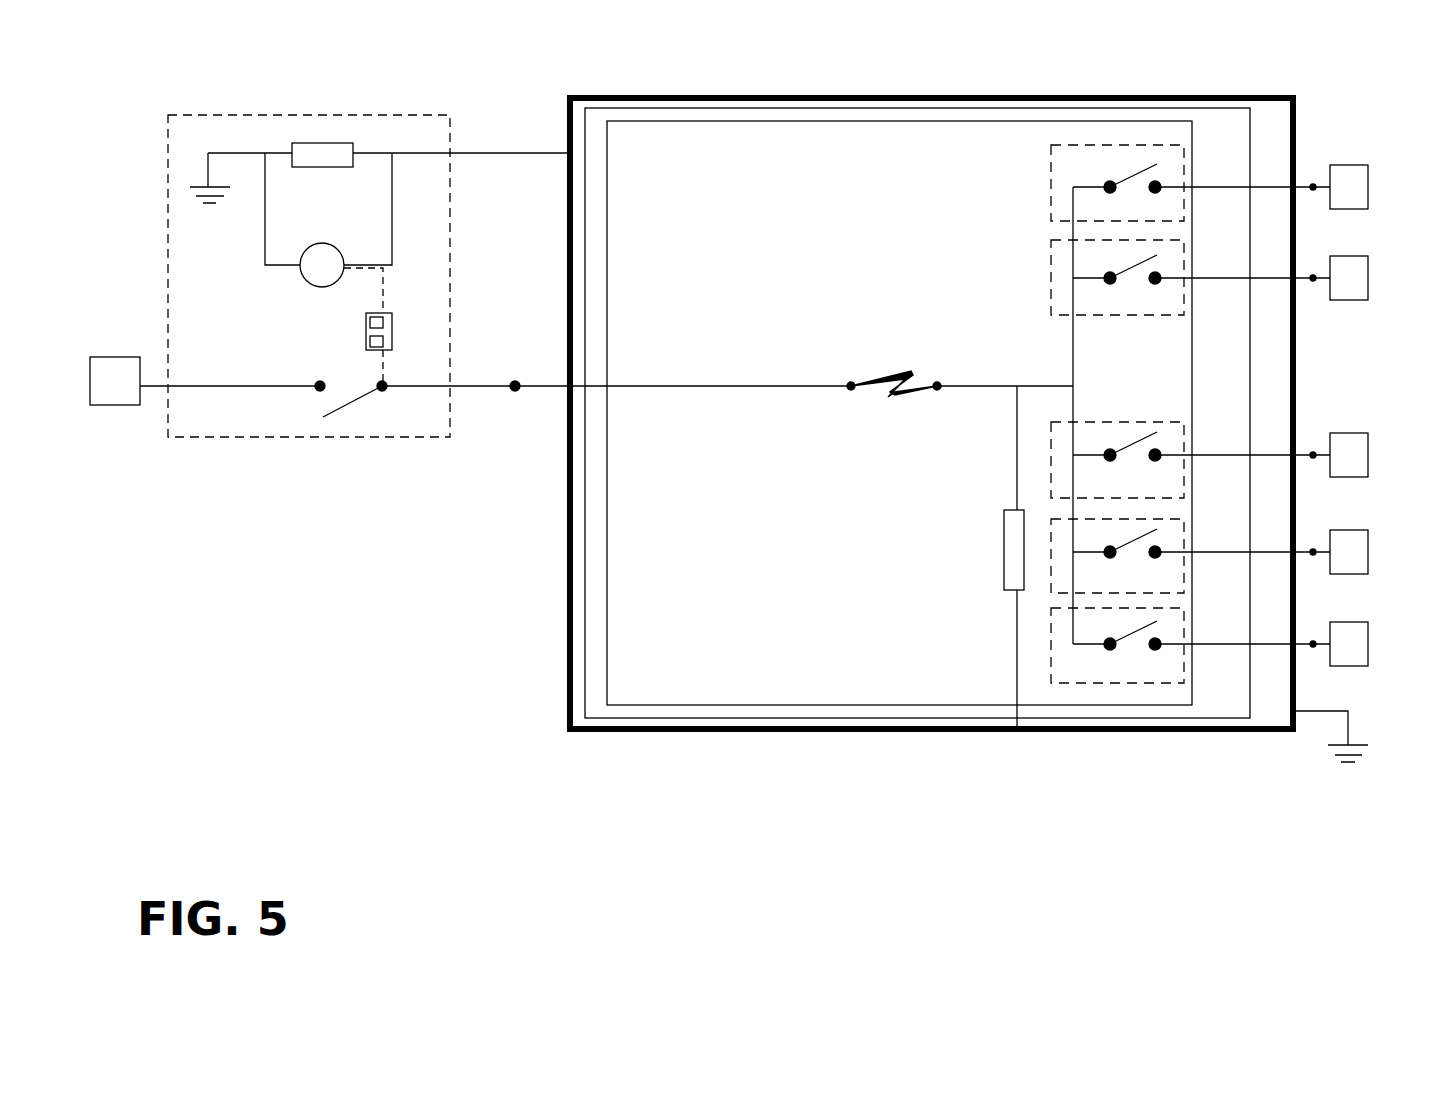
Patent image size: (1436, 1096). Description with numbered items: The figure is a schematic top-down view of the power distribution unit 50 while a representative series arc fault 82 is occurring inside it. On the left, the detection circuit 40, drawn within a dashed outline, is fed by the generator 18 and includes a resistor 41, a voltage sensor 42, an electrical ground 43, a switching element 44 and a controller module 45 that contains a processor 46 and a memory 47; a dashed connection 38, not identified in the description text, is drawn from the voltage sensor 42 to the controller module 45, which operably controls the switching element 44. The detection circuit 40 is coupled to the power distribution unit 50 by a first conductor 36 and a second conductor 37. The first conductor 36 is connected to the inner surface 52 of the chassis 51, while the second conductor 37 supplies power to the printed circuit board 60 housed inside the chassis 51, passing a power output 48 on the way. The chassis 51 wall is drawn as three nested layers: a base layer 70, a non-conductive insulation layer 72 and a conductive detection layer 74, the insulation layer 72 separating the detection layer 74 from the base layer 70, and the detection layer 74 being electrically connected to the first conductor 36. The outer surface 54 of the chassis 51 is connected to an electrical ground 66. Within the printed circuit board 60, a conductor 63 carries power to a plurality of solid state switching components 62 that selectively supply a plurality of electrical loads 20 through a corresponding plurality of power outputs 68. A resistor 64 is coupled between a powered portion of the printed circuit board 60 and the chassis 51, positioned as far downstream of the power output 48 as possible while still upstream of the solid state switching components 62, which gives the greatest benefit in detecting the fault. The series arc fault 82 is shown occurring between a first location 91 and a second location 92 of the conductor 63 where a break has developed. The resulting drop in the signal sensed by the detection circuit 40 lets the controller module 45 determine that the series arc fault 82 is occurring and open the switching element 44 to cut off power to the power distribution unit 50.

The generator 18 is at (205, 381).
The electrical load 20 is at (1349, 415).
The first conductor 36 is at (503, 152).
The second conductor 37 is at (478, 385).
The control connection 38 is at (388, 294).
The detection circuit 40 is at (312, 110).
The resistor 41 is at (315, 160).
The voltage sensor 42 is at (307, 285).
The electrical ground 43 is at (190, 177).
The switching element 44 is at (355, 403).
The controller module 45 is at (358, 331).
The processor 46 is at (366, 341).
The memory 47 is at (366, 320).
The power output 48 is at (513, 391).
The power distribution unit 50 is at (850, 411).
The chassis 51 is at (870, 92).
The inner surface 52 is at (993, 108).
The outer surface 54 is at (1118, 95).
The printed circuit board 60 is at (940, 148).
The solid state switching components 62 is at (1050, 187).
The conductor 63 is at (748, 385).
The resistor 64 is at (1014, 545).
The electrical ground 66 is at (1374, 757).
The power output 68 is at (1313, 184).
The base layer 70 is at (788, 96).
The insulation layer 72 is at (745, 108).
The detection layer 74 is at (703, 121).
The series arc fault 82 is at (897, 372).
The first location 91 is at (848, 388).
The second location 92 is at (940, 388).